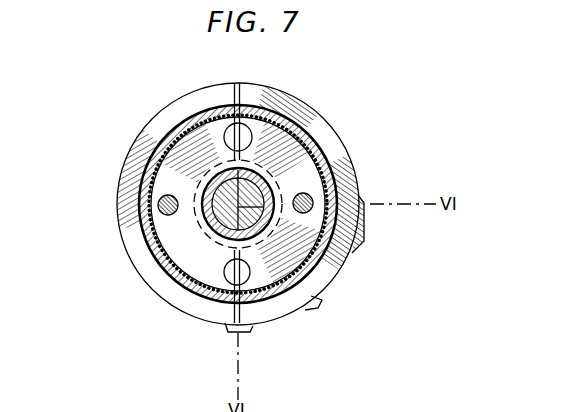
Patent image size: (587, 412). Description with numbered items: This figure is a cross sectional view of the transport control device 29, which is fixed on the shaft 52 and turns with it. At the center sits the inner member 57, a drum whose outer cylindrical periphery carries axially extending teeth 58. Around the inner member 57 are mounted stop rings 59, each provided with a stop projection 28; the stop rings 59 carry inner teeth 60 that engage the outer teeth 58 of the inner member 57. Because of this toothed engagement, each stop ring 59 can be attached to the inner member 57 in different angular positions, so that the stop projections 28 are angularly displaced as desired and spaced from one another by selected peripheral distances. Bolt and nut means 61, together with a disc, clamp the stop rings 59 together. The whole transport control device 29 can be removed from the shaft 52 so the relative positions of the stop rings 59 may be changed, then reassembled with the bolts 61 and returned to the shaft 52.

The stop projection 28 is at (362, 206).
The transport control device 29 is at (124, 150).
The shaft 52 is at (211, 230).
The inner member 57 is at (306, 131).
The teeth 58 is at (319, 154).
The stop ring 59 is at (170, 292).
The inner teeth 60 is at (358, 189).
The bolt and nut means 61 is at (157, 206).